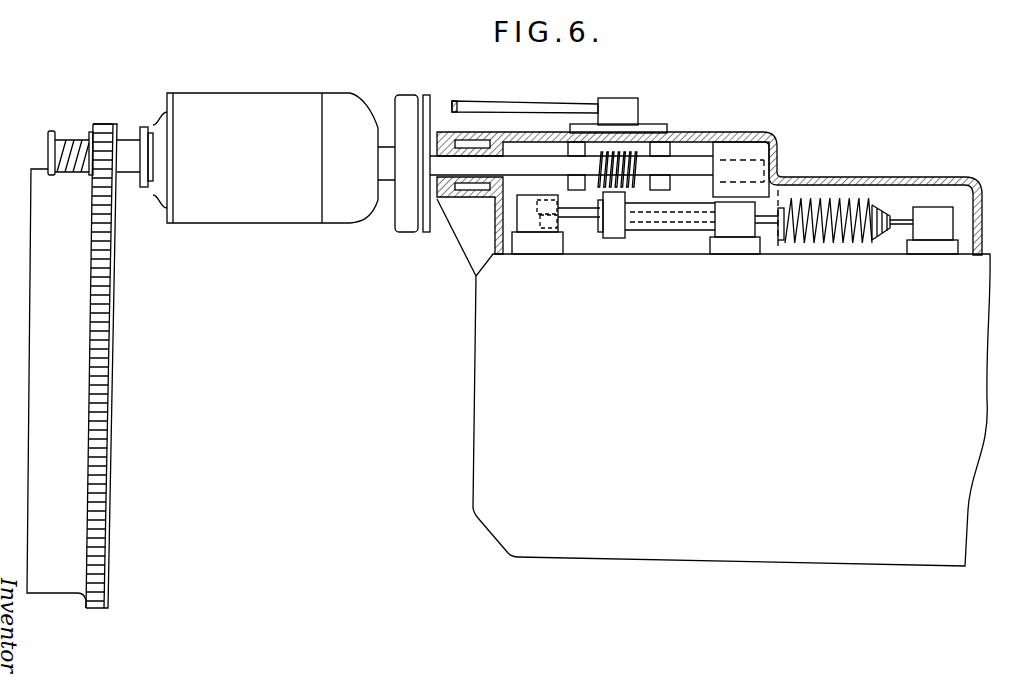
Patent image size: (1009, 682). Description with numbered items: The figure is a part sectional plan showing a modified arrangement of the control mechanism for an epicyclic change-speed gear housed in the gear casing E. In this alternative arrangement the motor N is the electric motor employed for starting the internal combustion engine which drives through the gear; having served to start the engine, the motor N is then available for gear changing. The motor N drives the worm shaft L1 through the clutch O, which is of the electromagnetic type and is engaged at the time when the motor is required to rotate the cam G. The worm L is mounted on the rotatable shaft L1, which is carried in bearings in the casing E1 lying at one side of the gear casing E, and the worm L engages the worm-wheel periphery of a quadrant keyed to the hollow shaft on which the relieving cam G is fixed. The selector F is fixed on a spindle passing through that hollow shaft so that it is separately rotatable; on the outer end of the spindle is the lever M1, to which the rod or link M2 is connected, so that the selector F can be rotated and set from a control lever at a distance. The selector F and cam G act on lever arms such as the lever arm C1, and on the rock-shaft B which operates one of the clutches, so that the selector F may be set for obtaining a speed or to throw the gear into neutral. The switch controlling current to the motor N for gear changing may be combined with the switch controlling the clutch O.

The motor N is at (267, 158).
The clutch O is at (413, 100).
The casing E1 is at (716, 135).
The shaft L1 is at (522, 165).
The worm L is at (628, 160).
The lever M1 is at (622, 106).
The rod or link M2 is at (565, 112).
The rock-shaft B is at (528, 215).
The relieving cam G is at (582, 210).
The selector F is at (596, 232).
The lever arm C1 is at (705, 222).
The gear casing E is at (731, 410).